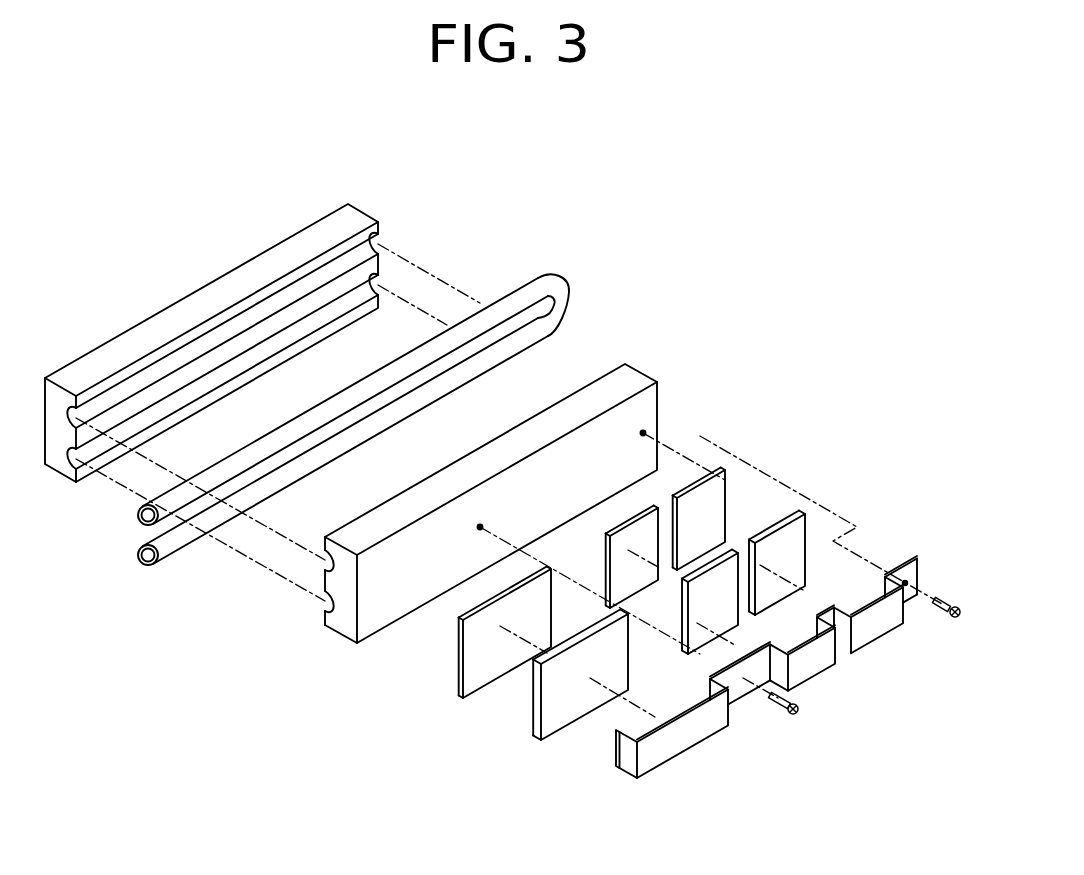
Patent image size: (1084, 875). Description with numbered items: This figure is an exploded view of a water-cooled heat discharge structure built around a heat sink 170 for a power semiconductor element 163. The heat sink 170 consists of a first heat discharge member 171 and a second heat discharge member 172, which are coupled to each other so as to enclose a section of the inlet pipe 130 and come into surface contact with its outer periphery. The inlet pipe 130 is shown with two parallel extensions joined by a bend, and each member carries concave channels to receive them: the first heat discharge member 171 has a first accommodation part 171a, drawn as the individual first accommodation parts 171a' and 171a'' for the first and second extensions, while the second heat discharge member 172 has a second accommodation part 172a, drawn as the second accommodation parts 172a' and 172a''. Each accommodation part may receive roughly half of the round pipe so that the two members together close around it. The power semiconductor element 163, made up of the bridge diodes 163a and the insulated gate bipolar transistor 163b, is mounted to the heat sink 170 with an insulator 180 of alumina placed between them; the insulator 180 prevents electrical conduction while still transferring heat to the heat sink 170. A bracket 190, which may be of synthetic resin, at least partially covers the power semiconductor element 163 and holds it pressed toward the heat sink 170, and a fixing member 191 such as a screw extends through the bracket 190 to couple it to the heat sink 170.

The inlet pipe 130 is at (517, 300).
The power semiconductor element 163 is at (572, 787).
The bridge diodes 163a is at (554, 702).
The insulated gate bipolar transistor 163b is at (777, 582).
The heat sink 170 is at (265, 720).
The first heat discharge member 171 is at (323, 624).
The first accommodation part 171a is at (511, 411).
The first accommodation part 171a' is at (511, 431).
The first accommodation part 171a'' is at (477, 411).
The second heat discharge member 172 is at (62, 468).
The second accommodation part 172a is at (222, 337).
The second accommodation part 172a' is at (222, 330).
The second accommodation part 172a'' is at (222, 356).
The insulator 180 is at (635, 543).
The bracket 190 is at (680, 738).
The fixing member 191 is at (960, 618).